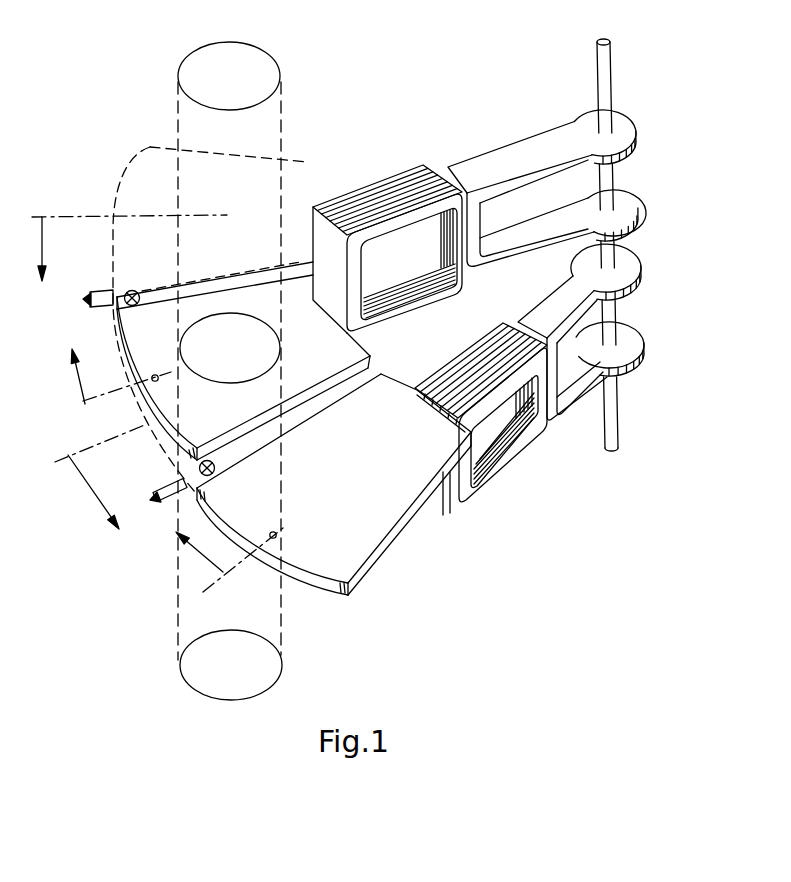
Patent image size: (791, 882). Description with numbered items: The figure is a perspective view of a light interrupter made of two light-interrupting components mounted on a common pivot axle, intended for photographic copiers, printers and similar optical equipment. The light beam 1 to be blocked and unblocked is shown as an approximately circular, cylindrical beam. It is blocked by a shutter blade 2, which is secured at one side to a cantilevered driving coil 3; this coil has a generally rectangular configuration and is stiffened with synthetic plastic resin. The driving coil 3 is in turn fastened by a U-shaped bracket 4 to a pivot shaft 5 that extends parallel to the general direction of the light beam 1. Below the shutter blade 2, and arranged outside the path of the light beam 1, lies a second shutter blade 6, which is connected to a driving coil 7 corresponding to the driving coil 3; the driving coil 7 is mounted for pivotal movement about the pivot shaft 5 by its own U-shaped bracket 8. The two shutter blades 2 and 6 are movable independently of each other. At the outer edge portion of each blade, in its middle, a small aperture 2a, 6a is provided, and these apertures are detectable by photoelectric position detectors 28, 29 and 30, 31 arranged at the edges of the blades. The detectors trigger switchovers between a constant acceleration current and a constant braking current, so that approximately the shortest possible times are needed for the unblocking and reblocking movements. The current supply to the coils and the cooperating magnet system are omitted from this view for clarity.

The light beam 1 is at (272, 102).
The shutter blade 2 is at (330, 318).
The small aperture 2a is at (152, 381).
The driving coil 3 is at (400, 177).
The U-shaped bracket 4 is at (508, 153).
The pivot shaft 5 is at (602, 78).
The second shutter blade 6 is at (378, 532).
The small aperture 6a is at (270, 540).
The driving coil 7 is at (497, 472).
The U-shaped bracket 8 is at (568, 402).
The photoelectric position detector 28 is at (215, 473).
The photoelectric position detector 29 is at (155, 496).
The photoelectric position detector 30 is at (133, 290).
The photoelectric position detector 31 is at (95, 296).